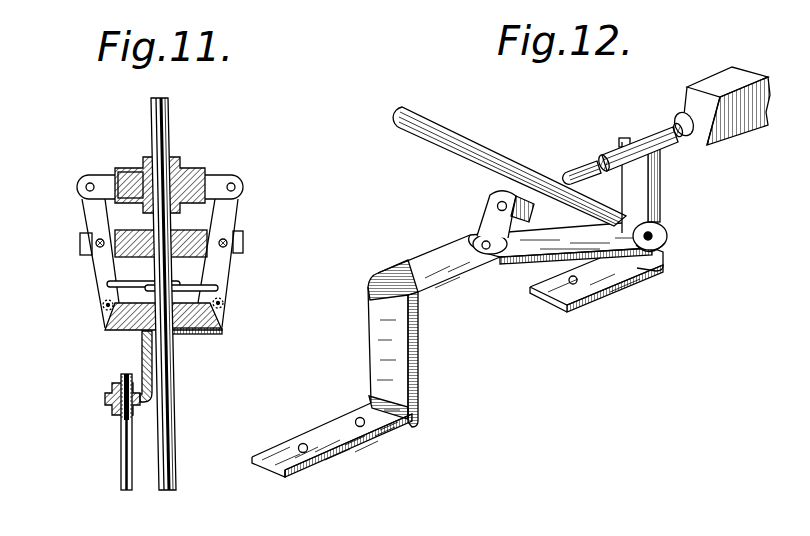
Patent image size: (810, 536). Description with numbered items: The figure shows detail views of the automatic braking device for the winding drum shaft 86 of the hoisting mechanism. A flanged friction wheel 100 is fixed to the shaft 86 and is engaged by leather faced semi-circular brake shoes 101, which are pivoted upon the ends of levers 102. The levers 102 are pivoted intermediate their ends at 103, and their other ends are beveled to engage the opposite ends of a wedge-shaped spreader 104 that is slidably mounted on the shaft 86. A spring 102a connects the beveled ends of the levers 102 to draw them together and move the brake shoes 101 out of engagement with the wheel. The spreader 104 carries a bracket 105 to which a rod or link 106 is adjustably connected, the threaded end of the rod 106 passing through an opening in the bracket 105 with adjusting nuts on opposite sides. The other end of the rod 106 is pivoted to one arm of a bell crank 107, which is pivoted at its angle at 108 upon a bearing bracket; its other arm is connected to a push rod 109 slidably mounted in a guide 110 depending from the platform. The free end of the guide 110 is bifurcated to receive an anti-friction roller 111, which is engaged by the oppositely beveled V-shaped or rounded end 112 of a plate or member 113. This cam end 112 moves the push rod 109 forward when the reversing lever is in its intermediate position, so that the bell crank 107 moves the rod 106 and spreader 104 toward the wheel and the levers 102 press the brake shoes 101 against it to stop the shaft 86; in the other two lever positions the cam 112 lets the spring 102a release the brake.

In FIG. 11, the winding drum shaft 86 is at (171, 416).
In FIG. 11, the flanged friction wheel 100 is at (183, 175).
In FIG. 11, the brake shoes 101 is at (115, 177).
In FIG. 11, the levers 102 is at (103, 274).
In FIG. 11, the spring 102a is at (228, 310).
In FIG. 11, the lever pivot 103 is at (96, 243).
In FIG. 11, the wedge-shaped spreader 104 is at (192, 318).
In FIG. 11, the bracket 105 is at (142, 352).
In FIG. 11, the rod or link 106 is at (121, 440).
In FIG. 12, the rod or link 106 is at (461, 140).
In FIG. 12, the bell crank 107 is at (531, 251).
In FIG. 12, the bell crank pivot 108 is at (472, 238).
In FIG. 12, the push rod 109 is at (565, 177).
In FIG. 12, the guide 110 is at (643, 192).
In FIG. 12, the anti-friction roller 111 is at (673, 117).
In FIG. 12, the cam end 112 is at (693, 103).
In FIG. 12, the plate or member 113 is at (729, 92).